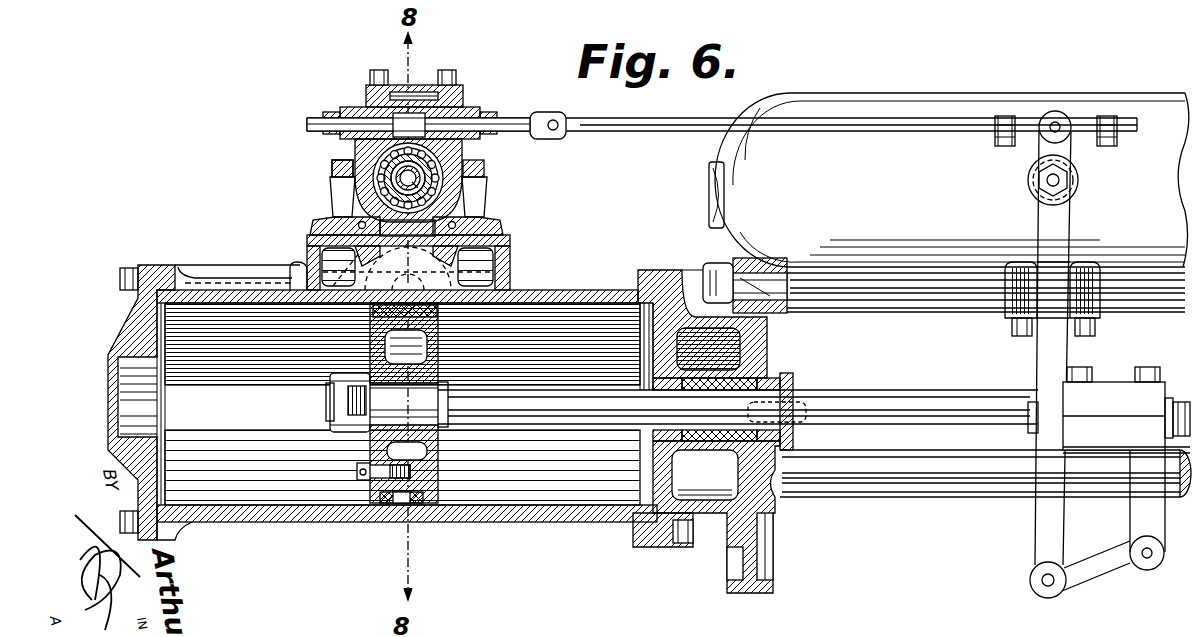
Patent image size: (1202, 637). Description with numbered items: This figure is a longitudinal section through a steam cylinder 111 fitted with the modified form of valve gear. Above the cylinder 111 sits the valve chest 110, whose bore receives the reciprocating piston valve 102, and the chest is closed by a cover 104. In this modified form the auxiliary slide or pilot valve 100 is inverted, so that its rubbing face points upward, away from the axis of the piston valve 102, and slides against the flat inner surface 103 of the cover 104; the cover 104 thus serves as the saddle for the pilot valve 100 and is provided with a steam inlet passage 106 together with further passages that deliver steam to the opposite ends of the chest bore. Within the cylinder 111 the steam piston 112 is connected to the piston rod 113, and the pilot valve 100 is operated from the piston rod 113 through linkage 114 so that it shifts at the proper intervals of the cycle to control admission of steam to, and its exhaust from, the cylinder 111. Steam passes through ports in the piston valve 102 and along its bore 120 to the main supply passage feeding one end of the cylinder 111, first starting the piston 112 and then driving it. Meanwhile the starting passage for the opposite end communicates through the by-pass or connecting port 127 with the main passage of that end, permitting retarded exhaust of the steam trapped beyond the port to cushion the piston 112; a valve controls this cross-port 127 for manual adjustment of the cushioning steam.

The auxiliary slide or pilot valve 100 is at (465, 106).
The piston valve 102 is at (452, 168).
The flat inner surface of the cover 103 is at (393, 100).
The cover of the valve chest 104 is at (366, 90).
The steam inlet passage 106 is at (448, 92).
The valve chest 110 is at (492, 215).
The cylinder 111 is at (540, 506).
The steam piston 112 is at (442, 516).
The piston rod 113 is at (885, 402).
The linkage 114 is at (1050, 211).
The bore of the piston valve 120 is at (434, 189).
The by-pass or connecting port 127 is at (297, 275).